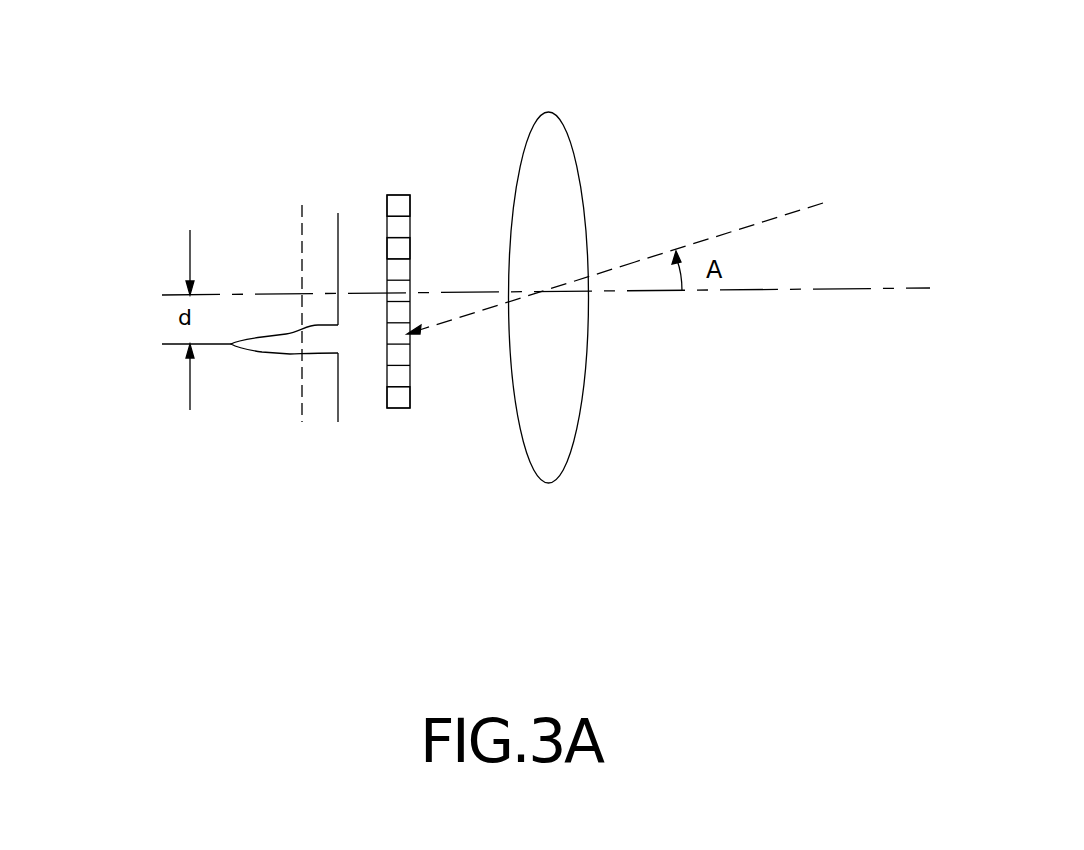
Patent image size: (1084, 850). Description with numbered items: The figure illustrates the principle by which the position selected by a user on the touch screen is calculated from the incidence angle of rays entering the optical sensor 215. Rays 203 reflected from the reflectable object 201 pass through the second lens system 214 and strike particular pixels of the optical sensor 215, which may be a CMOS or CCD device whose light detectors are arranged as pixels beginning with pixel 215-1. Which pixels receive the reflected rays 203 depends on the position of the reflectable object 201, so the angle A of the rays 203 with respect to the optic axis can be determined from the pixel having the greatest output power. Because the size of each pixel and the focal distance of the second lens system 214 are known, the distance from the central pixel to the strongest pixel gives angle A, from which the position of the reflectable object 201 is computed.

The reflectable object 201 is at (736, 220).
The reflected rays 203 is at (635, 261).
The second lens system 214 is at (547, 112).
The optical sensor 215 is at (398, 172).
The first pixel 215-1 is at (403, 207).